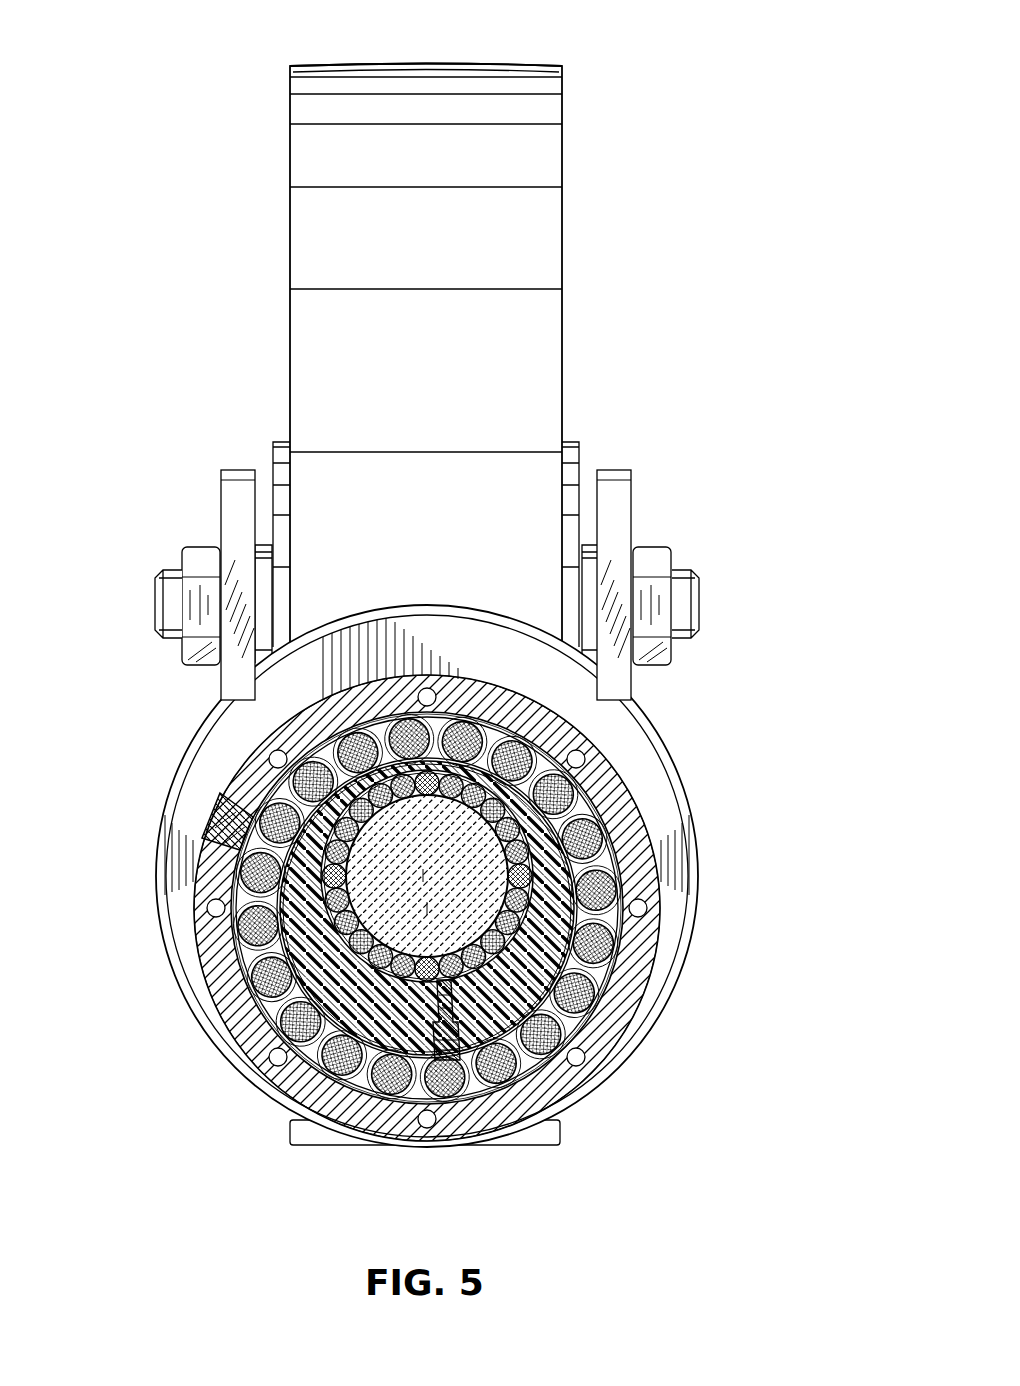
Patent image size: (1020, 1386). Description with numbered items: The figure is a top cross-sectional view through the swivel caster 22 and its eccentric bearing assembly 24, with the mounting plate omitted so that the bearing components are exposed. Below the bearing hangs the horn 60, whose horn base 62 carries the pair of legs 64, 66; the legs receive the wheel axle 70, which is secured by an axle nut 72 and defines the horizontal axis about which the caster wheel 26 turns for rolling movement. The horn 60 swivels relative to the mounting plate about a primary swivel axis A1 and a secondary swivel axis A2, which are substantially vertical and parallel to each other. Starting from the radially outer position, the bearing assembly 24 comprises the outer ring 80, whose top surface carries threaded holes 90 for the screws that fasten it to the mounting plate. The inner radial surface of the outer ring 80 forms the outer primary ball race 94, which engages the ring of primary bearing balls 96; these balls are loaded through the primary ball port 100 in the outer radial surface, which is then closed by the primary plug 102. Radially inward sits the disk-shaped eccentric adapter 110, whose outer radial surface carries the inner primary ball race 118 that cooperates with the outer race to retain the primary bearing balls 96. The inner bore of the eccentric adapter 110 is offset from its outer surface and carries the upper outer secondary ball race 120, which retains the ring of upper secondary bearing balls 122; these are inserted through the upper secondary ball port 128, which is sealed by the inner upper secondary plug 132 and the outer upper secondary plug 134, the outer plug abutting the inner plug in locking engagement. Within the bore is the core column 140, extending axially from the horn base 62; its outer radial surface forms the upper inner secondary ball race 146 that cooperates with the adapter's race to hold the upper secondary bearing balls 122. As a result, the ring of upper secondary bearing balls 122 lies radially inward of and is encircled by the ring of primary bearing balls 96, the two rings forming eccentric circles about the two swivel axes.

The swivel caster 22 is at (628, 64).
The eccentric bearing assembly 24 is at (196, 966).
The caster wheel 26 is at (550, 243).
The horn 60 is at (184, 757).
The horn base 62 is at (176, 782).
The leg 64 is at (616, 470).
The leg 66 is at (259, 470).
The wheel axle 70 is at (165, 600).
The axle nut 72 is at (193, 553).
The outer ring 80 is at (635, 880).
The threaded hole 90 is at (425, 1128).
The outer primary ball race 94 is at (600, 980).
The primary bearing balls 96 is at (242, 878).
The primary ball port 100 is at (228, 802).
The primary plug 102 is at (212, 835).
The eccentric adapter 110 is at (560, 842).
The inner primary ball race 118 is at (590, 920).
The upper outer secondary ball race 120 is at (492, 752).
The upper secondary bearing balls 122 is at (262, 1006).
The upper secondary ball port 128 is at (450, 1052).
The inner upper secondary plug 132 is at (558, 1058).
The outer upper secondary plug 134 is at (457, 987).
The core column 140 is at (398, 942).
The upper inner secondary ball race 146 is at (576, 718).
The primary swivel axis A1 is at (422, 908).
The secondary swivel axis A2 is at (418, 875).